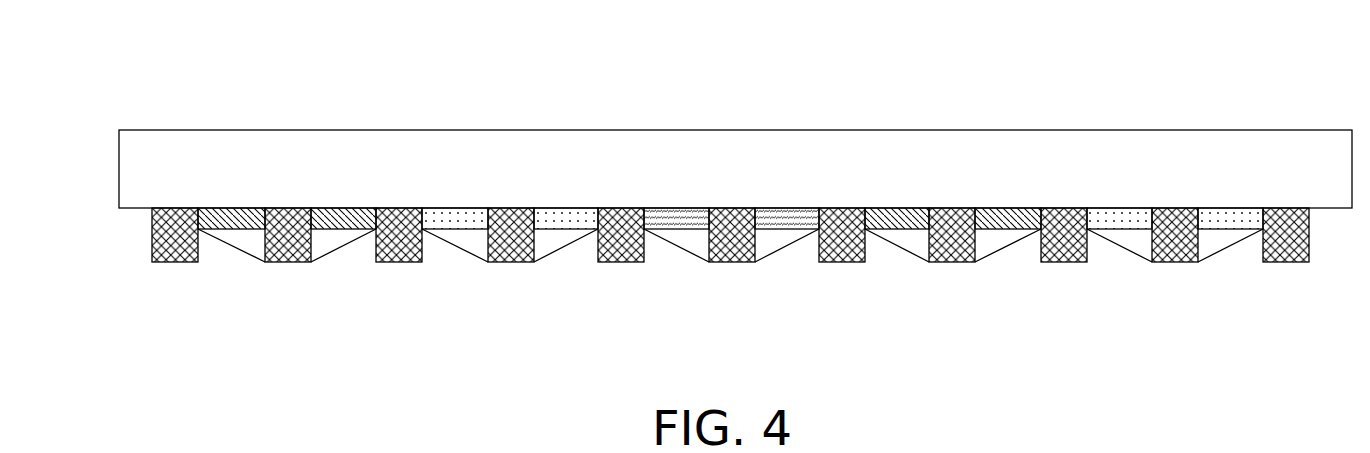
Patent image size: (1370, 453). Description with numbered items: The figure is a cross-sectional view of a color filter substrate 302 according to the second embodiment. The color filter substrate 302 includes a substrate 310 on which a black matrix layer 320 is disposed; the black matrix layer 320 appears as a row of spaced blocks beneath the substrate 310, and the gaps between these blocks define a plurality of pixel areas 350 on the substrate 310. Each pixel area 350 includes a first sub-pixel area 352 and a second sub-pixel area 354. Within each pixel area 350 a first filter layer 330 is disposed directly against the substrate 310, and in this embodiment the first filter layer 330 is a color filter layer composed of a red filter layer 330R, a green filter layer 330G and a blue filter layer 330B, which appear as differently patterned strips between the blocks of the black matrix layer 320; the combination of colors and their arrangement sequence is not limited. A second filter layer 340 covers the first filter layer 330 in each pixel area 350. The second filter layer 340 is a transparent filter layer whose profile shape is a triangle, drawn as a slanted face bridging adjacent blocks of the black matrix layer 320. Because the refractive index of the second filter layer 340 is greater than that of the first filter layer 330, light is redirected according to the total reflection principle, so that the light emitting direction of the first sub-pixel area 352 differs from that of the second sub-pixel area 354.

The color filter substrate 302 is at (697, 205).
The substrate 310 is at (150, 162).
The black matrix layer 320 is at (280, 263).
The first filter layer 330 is at (730, 114).
The blue filter layer 330B is at (805, 215).
The green filter layer 330G is at (1012, 215).
The red filter layer 330R is at (1221, 152).
The second filter layer 340 is at (775, 238).
The pixel area 350 is at (510, 320).
The first sub-pixel area 352 is at (565, 273).
The second sub-pixel area 354 is at (463, 279).